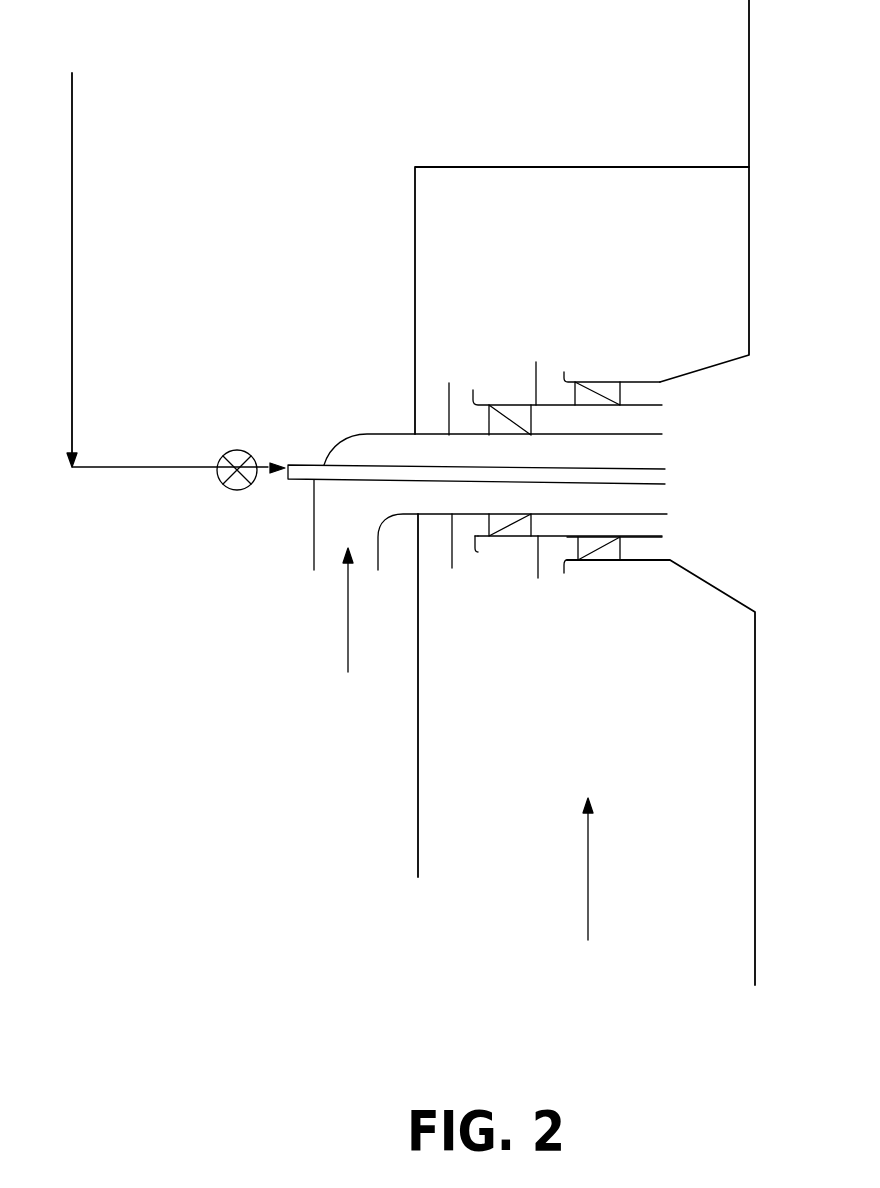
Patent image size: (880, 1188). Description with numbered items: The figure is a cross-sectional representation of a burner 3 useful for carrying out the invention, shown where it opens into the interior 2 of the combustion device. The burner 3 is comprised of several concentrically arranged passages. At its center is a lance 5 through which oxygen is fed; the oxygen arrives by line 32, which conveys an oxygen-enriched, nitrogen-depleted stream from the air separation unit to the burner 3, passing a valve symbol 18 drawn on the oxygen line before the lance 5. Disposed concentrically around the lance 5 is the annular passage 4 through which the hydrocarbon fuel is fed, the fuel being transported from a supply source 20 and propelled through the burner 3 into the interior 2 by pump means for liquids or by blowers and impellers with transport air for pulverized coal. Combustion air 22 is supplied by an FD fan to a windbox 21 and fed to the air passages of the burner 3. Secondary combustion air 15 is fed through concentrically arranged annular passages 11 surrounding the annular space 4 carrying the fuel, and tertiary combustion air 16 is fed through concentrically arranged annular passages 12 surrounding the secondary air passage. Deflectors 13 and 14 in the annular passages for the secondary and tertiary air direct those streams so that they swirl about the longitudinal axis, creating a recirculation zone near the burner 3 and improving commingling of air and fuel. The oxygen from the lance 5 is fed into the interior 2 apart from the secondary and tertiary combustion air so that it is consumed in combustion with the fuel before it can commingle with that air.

The interior 2 is at (813, 432).
The burner 3 is at (300, 580).
The annular passage 4 is at (412, 445).
The lance 5 is at (297, 462).
The annular passages 11 is at (602, 432).
The annular passages 12 is at (643, 396).
The deflector 13 is at (511, 420).
The deflector 14 is at (595, 400).
The secondary combustion air 15 is at (464, 570).
The tertiary combustion air 16 is at (553, 590).
The oxygen valve 18 is at (227, 491).
The supply source 20 is at (335, 641).
The windbox 21 is at (513, 167).
The combustion air 22 is at (592, 899).
The line 32 is at (85, 237).